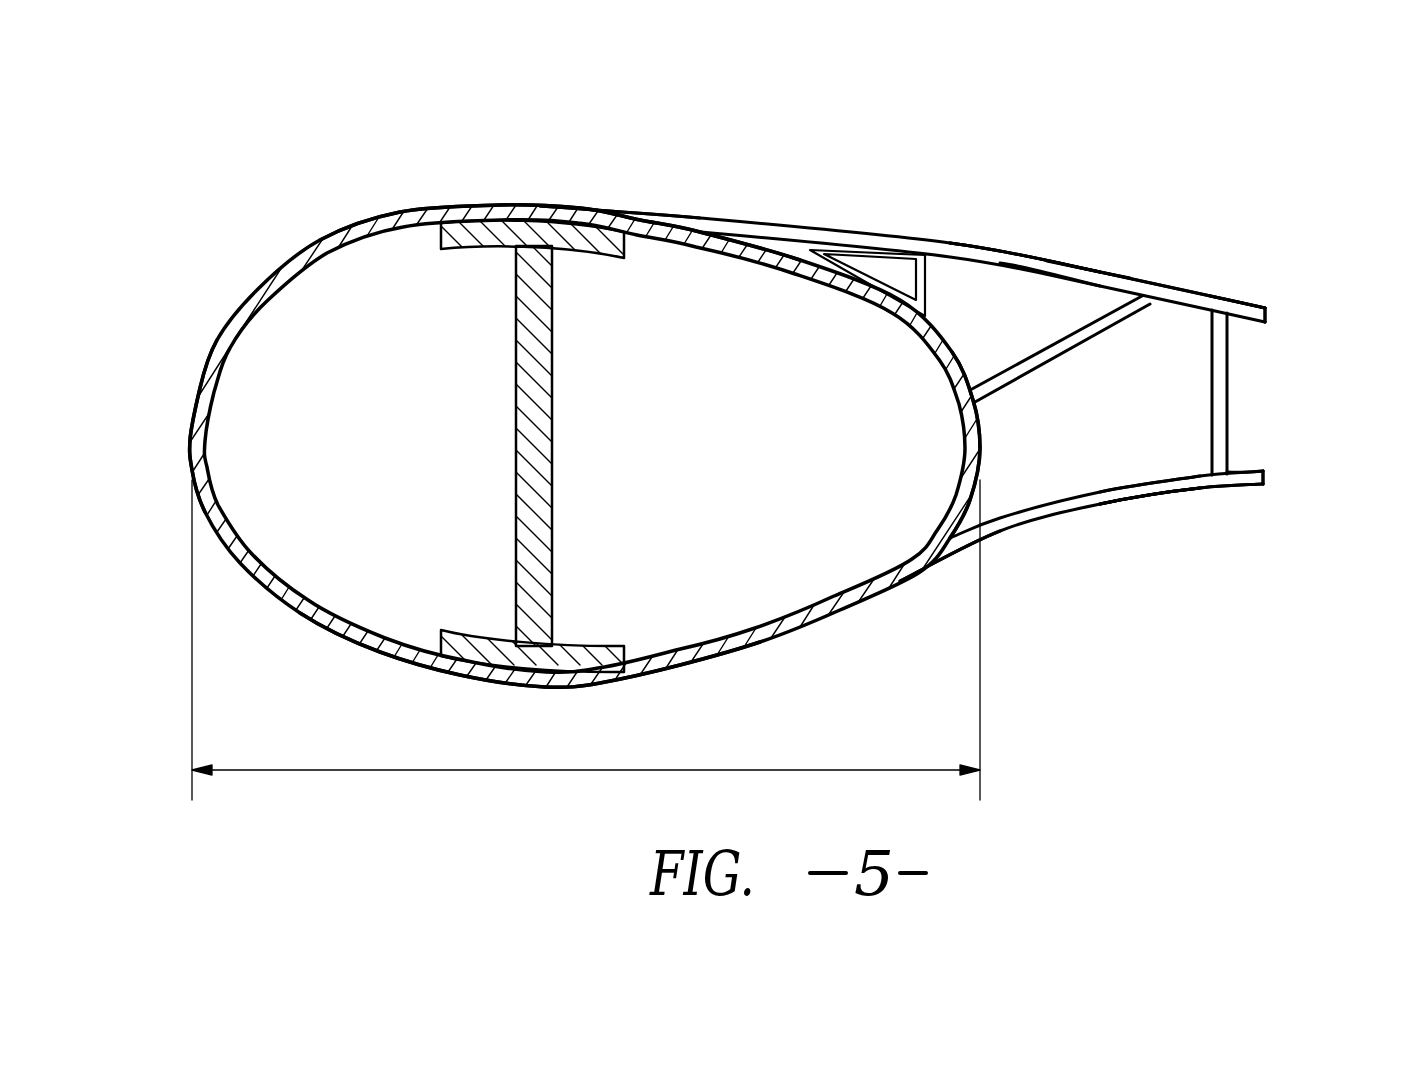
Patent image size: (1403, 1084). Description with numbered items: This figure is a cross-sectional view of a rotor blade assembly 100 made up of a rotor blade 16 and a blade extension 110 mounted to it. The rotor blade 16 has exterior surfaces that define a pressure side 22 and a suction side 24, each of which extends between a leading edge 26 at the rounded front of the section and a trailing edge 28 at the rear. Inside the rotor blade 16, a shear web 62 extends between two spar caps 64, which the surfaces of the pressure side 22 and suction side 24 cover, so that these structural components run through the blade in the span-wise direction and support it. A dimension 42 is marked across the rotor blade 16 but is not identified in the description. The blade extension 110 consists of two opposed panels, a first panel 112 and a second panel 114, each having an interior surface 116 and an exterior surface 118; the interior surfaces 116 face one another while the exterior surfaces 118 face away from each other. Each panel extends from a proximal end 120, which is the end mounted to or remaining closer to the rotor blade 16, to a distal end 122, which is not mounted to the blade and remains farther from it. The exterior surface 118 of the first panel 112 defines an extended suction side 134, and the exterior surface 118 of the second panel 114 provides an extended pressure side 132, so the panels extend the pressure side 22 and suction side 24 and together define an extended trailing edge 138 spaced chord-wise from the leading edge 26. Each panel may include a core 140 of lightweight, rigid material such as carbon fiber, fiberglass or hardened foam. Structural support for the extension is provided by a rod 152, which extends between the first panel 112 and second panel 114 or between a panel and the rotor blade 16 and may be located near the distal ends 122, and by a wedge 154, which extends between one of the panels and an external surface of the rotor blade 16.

The rotor blade assembly 100 is at (303, 150).
The rotor blade 16 is at (262, 245).
The pressure side 22 is at (547, 688).
The suction side 24 is at (536, 205).
The leading edge 26 is at (191, 438).
The trailing edge 28 is at (987, 428).
The chord width 42 is at (500, 772).
The shear web 62 is at (541, 465).
The spar caps 64 is at (590, 243).
The blade extension 110 is at (1030, 215).
The first panel 112 is at (950, 225).
The second panel 114 is at (1048, 530).
The interior surface 116 is at (1048, 278).
The exterior surface 118 is at (1116, 268).
The proximal end 120 is at (636, 195).
The distal end 122 is at (1270, 305).
The extended pressure side 132 is at (1163, 505).
The extended suction side 134 is at (1180, 288).
The extended trailing edge 138 is at (1295, 383).
The core 140 is at (1220, 305).
The rod 152 is at (1207, 413).
The wedge 154 is at (895, 282).